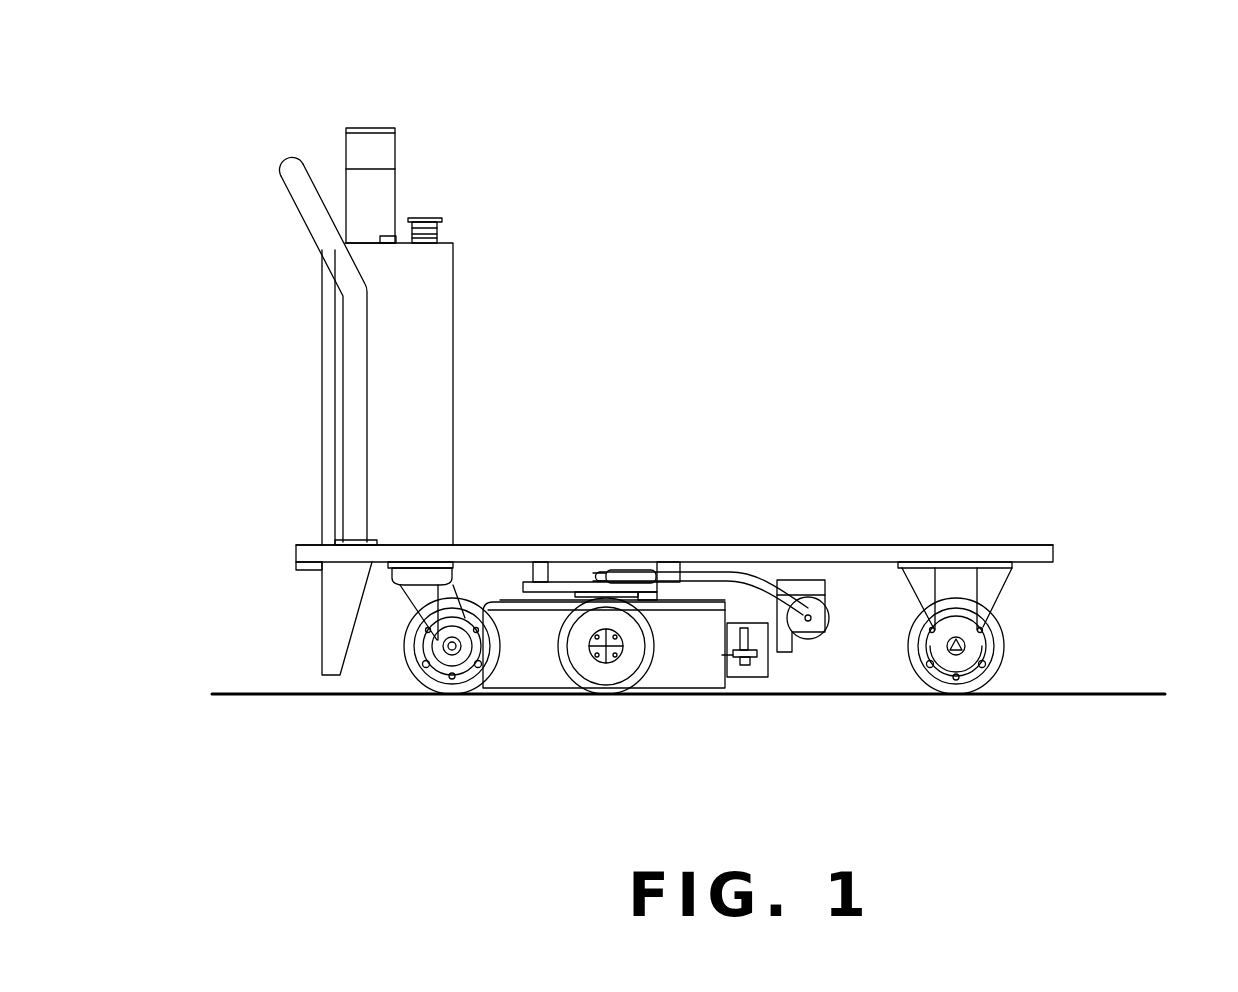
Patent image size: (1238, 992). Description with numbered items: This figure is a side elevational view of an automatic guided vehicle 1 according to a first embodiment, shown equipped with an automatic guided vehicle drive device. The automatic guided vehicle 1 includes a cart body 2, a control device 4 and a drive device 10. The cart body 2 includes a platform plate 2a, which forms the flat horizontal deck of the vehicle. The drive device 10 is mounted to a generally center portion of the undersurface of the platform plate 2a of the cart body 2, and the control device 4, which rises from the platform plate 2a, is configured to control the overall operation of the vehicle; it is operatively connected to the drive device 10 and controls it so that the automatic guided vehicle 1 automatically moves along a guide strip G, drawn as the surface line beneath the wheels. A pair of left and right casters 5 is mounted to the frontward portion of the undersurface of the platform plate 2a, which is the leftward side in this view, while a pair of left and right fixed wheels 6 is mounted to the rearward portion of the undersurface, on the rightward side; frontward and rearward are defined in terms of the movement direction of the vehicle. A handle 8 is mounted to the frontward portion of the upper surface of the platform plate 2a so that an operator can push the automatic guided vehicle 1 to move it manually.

The automatic guided vehicle 1 is at (757, 135).
The cart body 2 is at (803, 525).
The platform plate 2a is at (897, 547).
The control device 4 is at (458, 320).
The casters 5 is at (405, 663).
The fixed wheels 6 is at (998, 643).
The handle 8 is at (290, 157).
The drive device 10 is at (788, 670).
The guide strip G is at (1104, 694).